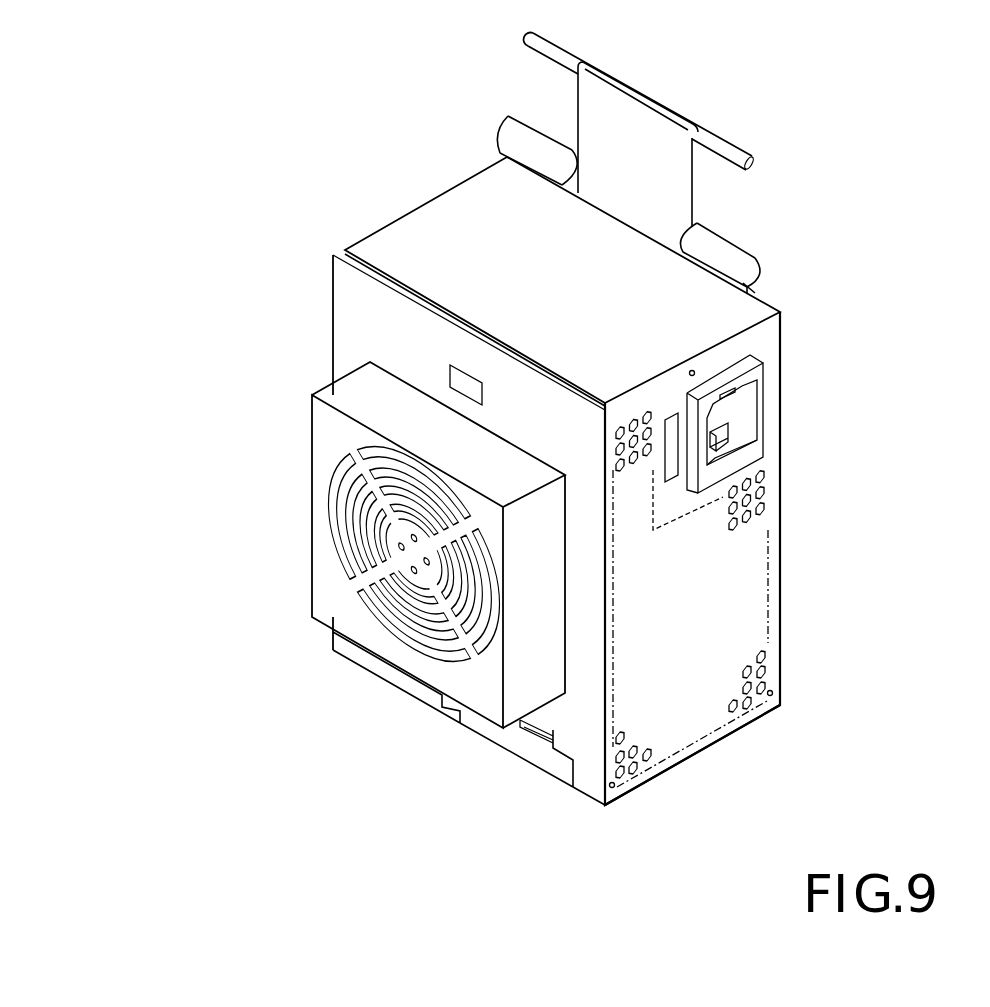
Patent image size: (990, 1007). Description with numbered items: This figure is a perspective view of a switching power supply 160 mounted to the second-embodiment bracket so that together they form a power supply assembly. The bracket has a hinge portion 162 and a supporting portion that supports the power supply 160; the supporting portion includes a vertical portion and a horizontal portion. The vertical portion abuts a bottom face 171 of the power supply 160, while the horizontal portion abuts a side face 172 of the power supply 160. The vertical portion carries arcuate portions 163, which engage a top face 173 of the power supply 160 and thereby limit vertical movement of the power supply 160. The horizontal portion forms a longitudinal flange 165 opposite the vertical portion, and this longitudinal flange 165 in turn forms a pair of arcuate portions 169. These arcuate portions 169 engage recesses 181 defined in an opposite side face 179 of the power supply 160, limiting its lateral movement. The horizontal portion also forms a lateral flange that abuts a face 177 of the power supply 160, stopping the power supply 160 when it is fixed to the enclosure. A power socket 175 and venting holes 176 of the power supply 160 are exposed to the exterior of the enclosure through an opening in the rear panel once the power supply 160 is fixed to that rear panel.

The switching power supply 160 is at (750, 583).
The hinge portion 162 is at (740, 145).
The arcuate portions 163 is at (727, 262).
The longitudinal flange 165 is at (493, 733).
The arcuate portions 169 is at (547, 740).
The bottom face 171 is at (705, 753).
The side face 172 is at (782, 490).
The top face 173 is at (430, 230).
The power socket 175 is at (747, 415).
The venting holes 176 is at (758, 690).
The face 177 is at (333, 313).
The opposite side face 179 is at (593, 755).
The recesses 181 is at (520, 723).